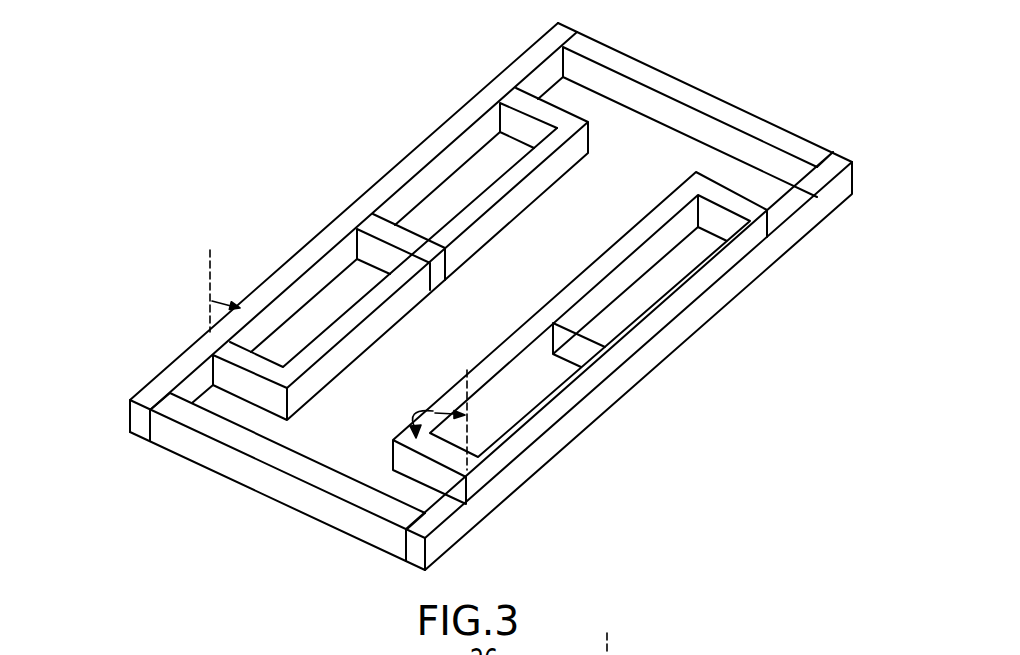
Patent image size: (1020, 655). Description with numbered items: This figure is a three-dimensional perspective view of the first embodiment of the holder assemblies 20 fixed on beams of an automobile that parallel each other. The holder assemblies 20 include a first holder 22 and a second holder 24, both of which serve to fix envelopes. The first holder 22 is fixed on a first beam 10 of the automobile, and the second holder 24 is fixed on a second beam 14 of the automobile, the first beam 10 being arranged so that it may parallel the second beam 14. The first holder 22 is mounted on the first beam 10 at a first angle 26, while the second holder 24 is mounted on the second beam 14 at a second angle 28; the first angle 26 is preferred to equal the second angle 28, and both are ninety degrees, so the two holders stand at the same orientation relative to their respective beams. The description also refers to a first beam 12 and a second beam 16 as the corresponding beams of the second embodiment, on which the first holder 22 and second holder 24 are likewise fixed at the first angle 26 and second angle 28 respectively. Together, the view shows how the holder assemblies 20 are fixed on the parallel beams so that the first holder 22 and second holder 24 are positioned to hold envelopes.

The first beam 10 is at (367, 200).
The first beam 12 is at (632, 68).
The second beam 14 is at (767, 258).
The second beam 16 is at (256, 485).
The holder assemblies 20 is at (769, 345).
The first holder 22 is at (343, 325).
The second holder 24 is at (434, 268).
The first angle 26 is at (263, 378).
The second angle 28 is at (435, 410).